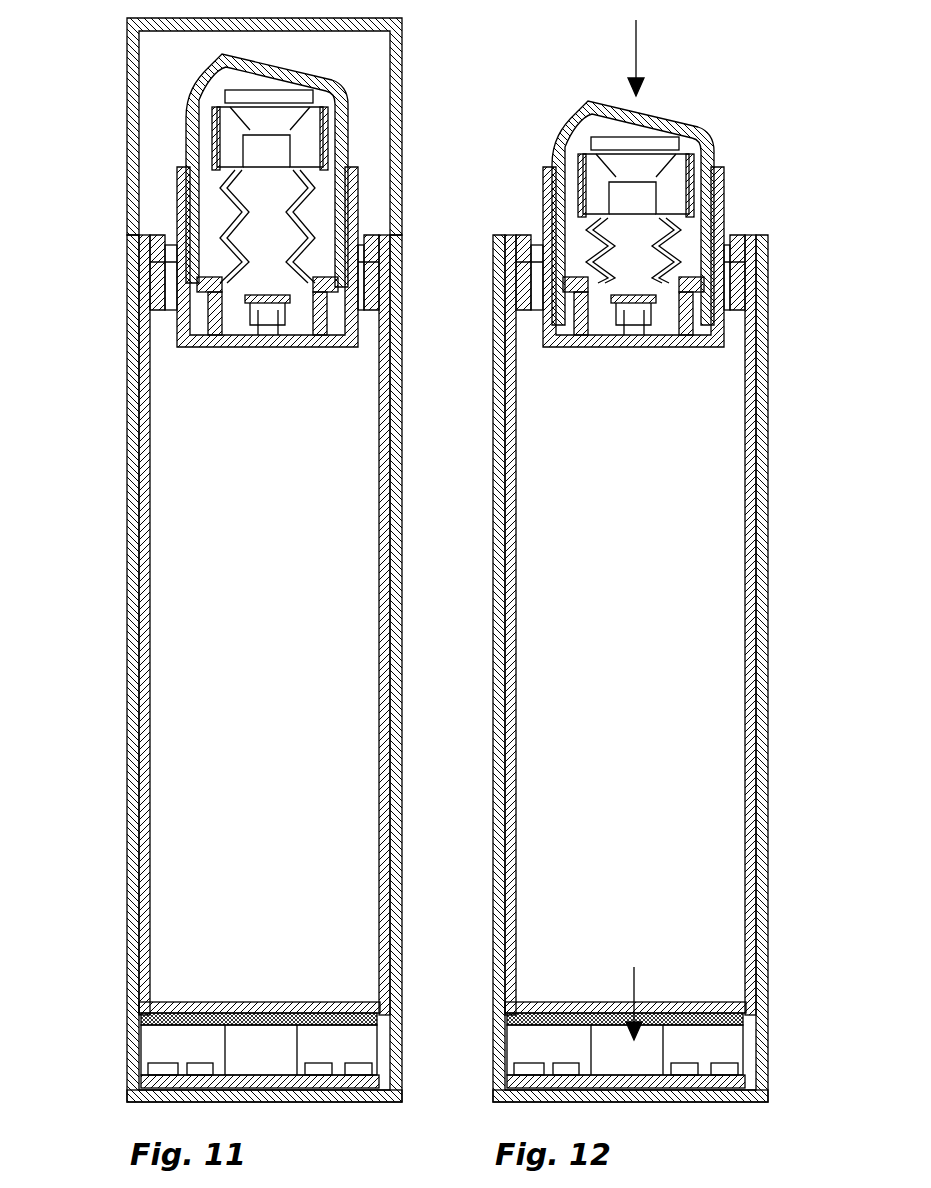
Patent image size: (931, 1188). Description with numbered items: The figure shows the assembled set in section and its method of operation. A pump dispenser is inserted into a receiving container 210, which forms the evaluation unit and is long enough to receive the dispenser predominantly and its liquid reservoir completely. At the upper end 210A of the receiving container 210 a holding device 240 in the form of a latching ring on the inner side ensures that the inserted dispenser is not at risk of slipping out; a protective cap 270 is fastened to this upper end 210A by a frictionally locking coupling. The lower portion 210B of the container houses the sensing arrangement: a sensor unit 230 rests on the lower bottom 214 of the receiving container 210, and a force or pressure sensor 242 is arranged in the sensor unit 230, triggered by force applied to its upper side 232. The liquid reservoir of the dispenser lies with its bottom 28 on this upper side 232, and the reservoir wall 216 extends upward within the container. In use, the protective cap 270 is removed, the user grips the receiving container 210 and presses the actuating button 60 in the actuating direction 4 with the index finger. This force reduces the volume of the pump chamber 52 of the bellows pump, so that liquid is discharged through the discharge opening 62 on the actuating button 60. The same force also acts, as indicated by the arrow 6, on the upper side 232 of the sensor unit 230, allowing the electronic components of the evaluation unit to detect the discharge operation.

In FIG. 12, the actuating direction 4 is at (640, 40).
In FIG. 12, the arrow 6 is at (640, 990).
In FIG. 11, the bottom 28 is at (165, 1003).
In FIG. 12, the bottom 28 is at (625, 1007).
In FIG. 12, the pump chamber 52 is at (650, 277).
In FIG. 11, the actuating button 60 is at (200, 97).
In FIG. 12, the actuating button 60 is at (566, 153).
In FIG. 12, the discharge opening 62 is at (592, 112).
In FIG. 11, the receiving container 210 is at (272, 594).
In FIG. 12, the receiving container 210 is at (634, 595).
In FIG. 11, the upper end 210A is at (273, 516).
In FIG. 12, the upper end 210A is at (633, 517).
In FIG. 11, the lower portion of dispenser 210B is at (253, 1038).
In FIG. 12, the lower portion of dispenser 210B is at (634, 1057).
In FIG. 11, the lower bottom 214 is at (272, 1103).
In FIG. 12, the lower bottom 214 is at (638, 1103).
In FIG. 11, the inner container 216 is at (140, 490).
In FIG. 12, the inner container 216 is at (630, 625).
In FIG. 11, the sensor unit 230 is at (325, 1082).
In FIG. 12, the sensor unit 230 is at (691, 1082).
In FIG. 11, the upper side 232 is at (352, 1012).
In FIG. 12, the upper side 232 is at (543, 1010).
In FIG. 11, the holding device 240 is at (392, 245).
In FIG. 12, the holding device 240 is at (633, 257).
In FIG. 11, the force or pressure sensor 242 is at (280, 1045).
In FIG. 12, the force or pressure sensor 242 is at (640, 1040).
In FIG. 11, the protective cap 270 is at (403, 30).